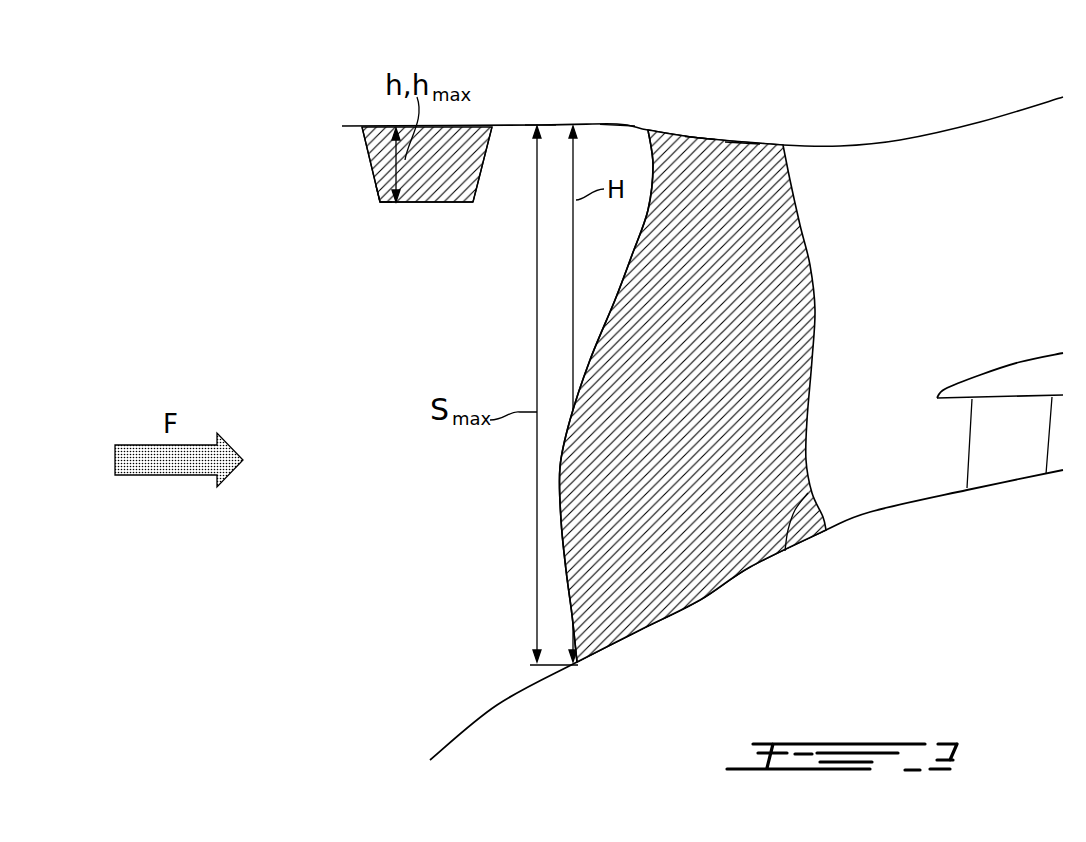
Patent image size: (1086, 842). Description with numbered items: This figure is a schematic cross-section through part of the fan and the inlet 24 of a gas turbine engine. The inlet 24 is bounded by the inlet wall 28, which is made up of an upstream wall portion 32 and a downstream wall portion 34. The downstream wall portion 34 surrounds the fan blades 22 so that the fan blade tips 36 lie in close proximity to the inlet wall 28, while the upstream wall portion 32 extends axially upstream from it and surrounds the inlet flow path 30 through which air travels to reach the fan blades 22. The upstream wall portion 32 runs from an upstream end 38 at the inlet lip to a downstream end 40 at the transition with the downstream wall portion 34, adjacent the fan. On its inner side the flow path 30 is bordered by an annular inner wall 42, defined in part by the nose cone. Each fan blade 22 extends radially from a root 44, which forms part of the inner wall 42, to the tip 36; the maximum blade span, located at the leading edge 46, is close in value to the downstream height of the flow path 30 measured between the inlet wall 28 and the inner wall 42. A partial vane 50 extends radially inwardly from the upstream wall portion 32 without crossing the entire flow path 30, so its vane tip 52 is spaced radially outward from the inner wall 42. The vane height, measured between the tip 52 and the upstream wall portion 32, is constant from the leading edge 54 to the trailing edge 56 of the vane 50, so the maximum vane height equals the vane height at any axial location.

The fan blade 22 is at (781, 269).
The inlet 24 is at (216, 179).
The inlet wall 28 is at (353, 108).
The inlet flow path 30 is at (389, 409).
The upstream wall portion 32 is at (540, 126).
The downstream wall portion 34 is at (700, 136).
The fan blade tip 36 is at (740, 140).
The upstream end 38 is at (348, 128).
The downstream end 40 is at (618, 122).
The inner wall 42 is at (497, 705).
The root 44 is at (812, 493).
The leading edge 46 is at (561, 473).
The vane 50 is at (370, 161).
The vane tip 52 is at (433, 204).
The leading edge 54 is at (376, 196).
The trailing edge 56 is at (481, 172).